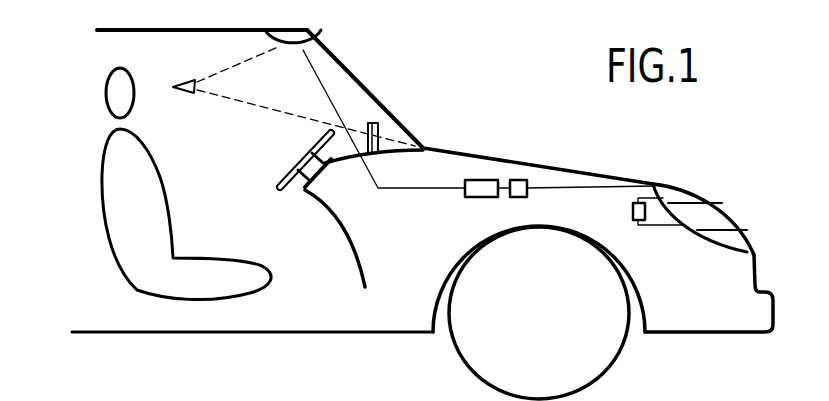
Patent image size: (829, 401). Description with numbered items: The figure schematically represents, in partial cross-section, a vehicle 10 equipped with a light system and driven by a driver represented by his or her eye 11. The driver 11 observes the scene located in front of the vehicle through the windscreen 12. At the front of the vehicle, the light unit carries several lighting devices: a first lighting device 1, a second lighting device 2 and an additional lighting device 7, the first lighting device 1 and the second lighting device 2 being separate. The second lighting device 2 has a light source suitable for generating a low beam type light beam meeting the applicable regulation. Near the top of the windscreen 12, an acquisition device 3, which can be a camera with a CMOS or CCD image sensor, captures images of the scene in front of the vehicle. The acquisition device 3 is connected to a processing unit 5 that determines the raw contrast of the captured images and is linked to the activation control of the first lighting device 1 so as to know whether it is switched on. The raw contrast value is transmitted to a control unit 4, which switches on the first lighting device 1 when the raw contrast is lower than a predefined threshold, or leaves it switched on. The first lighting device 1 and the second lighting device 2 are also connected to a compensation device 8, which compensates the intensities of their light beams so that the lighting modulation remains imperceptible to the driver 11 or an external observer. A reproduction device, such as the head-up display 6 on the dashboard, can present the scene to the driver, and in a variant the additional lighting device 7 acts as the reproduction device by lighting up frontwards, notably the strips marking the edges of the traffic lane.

The first lighting device 1 is at (693, 197).
The second lighting device 2 is at (721, 212).
The acquisition device 3 is at (300, 33).
The control unit 4 is at (518, 193).
The processing unit 5 is at (478, 193).
The head-up display 6 is at (378, 123).
The additional lighting device 7 is at (737, 240).
The compensation device 8 is at (632, 208).
The vehicle 10 is at (87, 51).
The eye 11 is at (188, 80).
The windscreen 12 is at (365, 85).